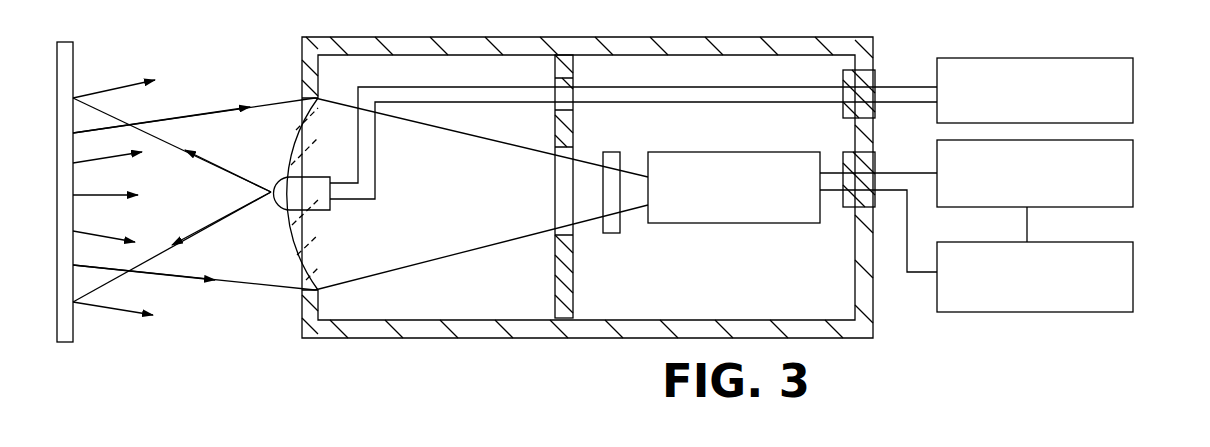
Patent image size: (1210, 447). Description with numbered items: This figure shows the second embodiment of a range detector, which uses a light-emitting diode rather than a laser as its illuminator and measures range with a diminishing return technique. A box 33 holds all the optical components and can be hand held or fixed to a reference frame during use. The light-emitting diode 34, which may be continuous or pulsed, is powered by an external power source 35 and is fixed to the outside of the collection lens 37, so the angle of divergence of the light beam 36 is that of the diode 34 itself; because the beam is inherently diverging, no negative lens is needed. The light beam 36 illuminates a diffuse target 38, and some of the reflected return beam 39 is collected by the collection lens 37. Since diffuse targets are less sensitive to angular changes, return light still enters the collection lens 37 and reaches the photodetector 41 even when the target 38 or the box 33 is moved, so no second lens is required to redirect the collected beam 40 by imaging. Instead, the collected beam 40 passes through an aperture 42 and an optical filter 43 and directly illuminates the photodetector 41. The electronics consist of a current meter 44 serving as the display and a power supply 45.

The box 33 is at (478, 37).
The light-emitting diode 34 is at (280, 211).
The external power source 35 is at (990, 58).
The light beam 36 is at (222, 168).
The collection lens 37 is at (297, 143).
The target 38 is at (73, 67).
The return beam 39 is at (118, 312).
The collected beam 40 is at (498, 162).
The photodetector 41 is at (715, 224).
The aperture 42 is at (555, 288).
The optical filter 43 is at (612, 152).
The current meter 44 is at (1133, 265).
The power supply 45 is at (1133, 160).